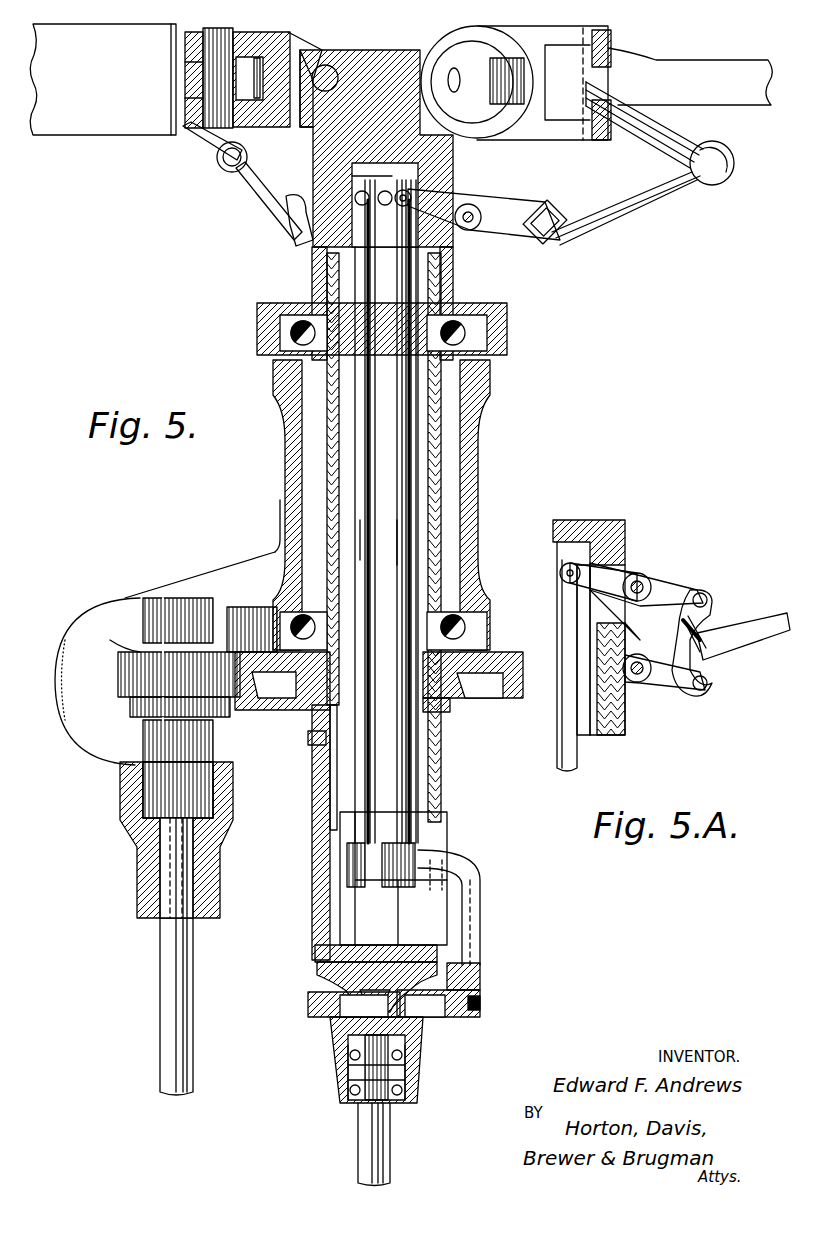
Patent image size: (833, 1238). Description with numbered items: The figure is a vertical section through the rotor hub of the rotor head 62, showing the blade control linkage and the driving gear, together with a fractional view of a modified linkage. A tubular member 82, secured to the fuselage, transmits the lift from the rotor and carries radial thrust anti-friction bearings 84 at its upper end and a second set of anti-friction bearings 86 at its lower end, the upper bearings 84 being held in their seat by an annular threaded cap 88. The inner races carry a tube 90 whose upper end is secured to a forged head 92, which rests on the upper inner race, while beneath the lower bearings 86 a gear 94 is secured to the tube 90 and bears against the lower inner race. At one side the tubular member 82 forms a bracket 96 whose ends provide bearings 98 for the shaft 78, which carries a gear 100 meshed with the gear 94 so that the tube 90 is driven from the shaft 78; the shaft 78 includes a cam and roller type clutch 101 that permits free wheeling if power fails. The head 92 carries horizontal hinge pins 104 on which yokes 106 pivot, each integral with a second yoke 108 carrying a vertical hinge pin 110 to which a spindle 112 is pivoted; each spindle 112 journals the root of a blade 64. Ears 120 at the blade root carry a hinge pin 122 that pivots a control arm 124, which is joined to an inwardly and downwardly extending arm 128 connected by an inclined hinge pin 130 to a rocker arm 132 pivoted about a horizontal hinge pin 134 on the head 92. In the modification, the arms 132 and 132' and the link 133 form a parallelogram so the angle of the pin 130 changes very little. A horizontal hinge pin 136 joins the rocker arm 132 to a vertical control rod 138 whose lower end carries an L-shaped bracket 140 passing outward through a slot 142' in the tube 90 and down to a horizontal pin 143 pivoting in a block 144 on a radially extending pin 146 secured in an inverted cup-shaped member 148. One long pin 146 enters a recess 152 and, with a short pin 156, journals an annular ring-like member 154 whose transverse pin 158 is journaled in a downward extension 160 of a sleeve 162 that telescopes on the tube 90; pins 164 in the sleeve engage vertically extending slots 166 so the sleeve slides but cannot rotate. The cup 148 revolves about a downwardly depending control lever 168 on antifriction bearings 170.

In FIG. 5, the rotor head 62 is at (374, 44).
In FIG. 5, the articulated blade 64 is at (716, 70).
In FIG. 5, the shaft 78 is at (170, 984).
In FIG. 5, the tubular member 82 is at (470, 494).
In FIG. 5, the radial thrust anti-friction bearings 84 is at (510, 350).
In FIG. 5, the anti-friction bearings 86 is at (492, 628).
In FIG. 5, the annular threaded cap 88 is at (510, 331).
In FIG. 5, the tube 90 is at (440, 297).
In FIG. 5A, the tube 90 is at (600, 745).
In FIG. 5, the forged head 92 is at (453, 168).
In FIG. 5A, the forged head 92 is at (630, 536).
In FIG. 5, the gear 94 is at (533, 680).
In FIG. 5, the bracket 96 is at (262, 603).
In FIG. 5, the bearings 98 is at (175, 618).
In FIG. 5, the gear 100 is at (133, 680).
In FIG. 5, the cam and roller type clutch 101 is at (138, 838).
In FIG. 5, the horizontal hinge pin 104 is at (332, 55).
In FIG. 5, the yoke 106 is at (300, 33).
In FIG. 5, the second yoke 108 is at (198, 22).
In FIG. 5, the vertical hinge pin 110 is at (240, 22).
In FIG. 5, the spindle 112 is at (190, 137).
In FIG. 5, the outwardly extending ears 120 is at (568, 22).
In FIG. 5, the hinge pin 122 is at (600, 25).
In FIG. 5, the control arm 124 is at (700, 129).
In FIG. 5, the arm 128 is at (663, 192).
In FIG. 5A, the arm 128 is at (761, 619).
In FIG. 5, the hinge pin 130 is at (585, 187).
In FIG. 5A, the hinge pin 130 is at (715, 606).
In FIG. 5, the rocker arm 132 is at (484, 195).
In FIG. 5A, the rocker arm 132 is at (656, 593).
In FIG. 5A, the rocker arm 132' is at (679, 691).
In FIG. 5A, the link 133 is at (715, 656).
In FIG. 5, the horizontal hinge pin 134 is at (480, 232).
In FIG. 5A, the horizontal hinge pin 134 is at (642, 578).
In FIG. 5, the horizontal hinge pin 136 is at (412, 202).
In FIG. 5A, the horizontal hinge pin 136 is at (562, 570).
In FIG. 5, the control rod 138 is at (365, 552).
In FIG. 5A, the control rod 138 is at (560, 620).
In FIG. 5, the L-shaped bracket 140 is at (477, 880).
In FIG. 5, the slot 142' is at (425, 849).
In FIG. 5, the horizontal pin 143 is at (491, 1008).
In FIG. 5, the block 144 is at (483, 1015).
In FIG. 5, the radially extending pin 146 is at (443, 1018).
In FIG. 5, the inverted cup-shaped member 148 is at (407, 1060).
In FIG. 5, the recess 152 is at (345, 1050).
In FIG. 5, the annular ring-like member 154 is at (350, 1030).
In FIG. 5, the short pin 156 is at (330, 1002).
In FIG. 5, the transverse pin 158 is at (460, 961).
In FIG. 5, the downward extension 160 is at (347, 988).
In FIG. 5, the sleeve 162 is at (318, 920).
In FIG. 5, the pins 164 is at (315, 760).
In FIG. 5, the vertically extending slots 166 is at (317, 783).
In FIG. 5, the control lever 168 is at (370, 1162).
In FIG. 5, the antifriction bearings 170 is at (415, 1090).